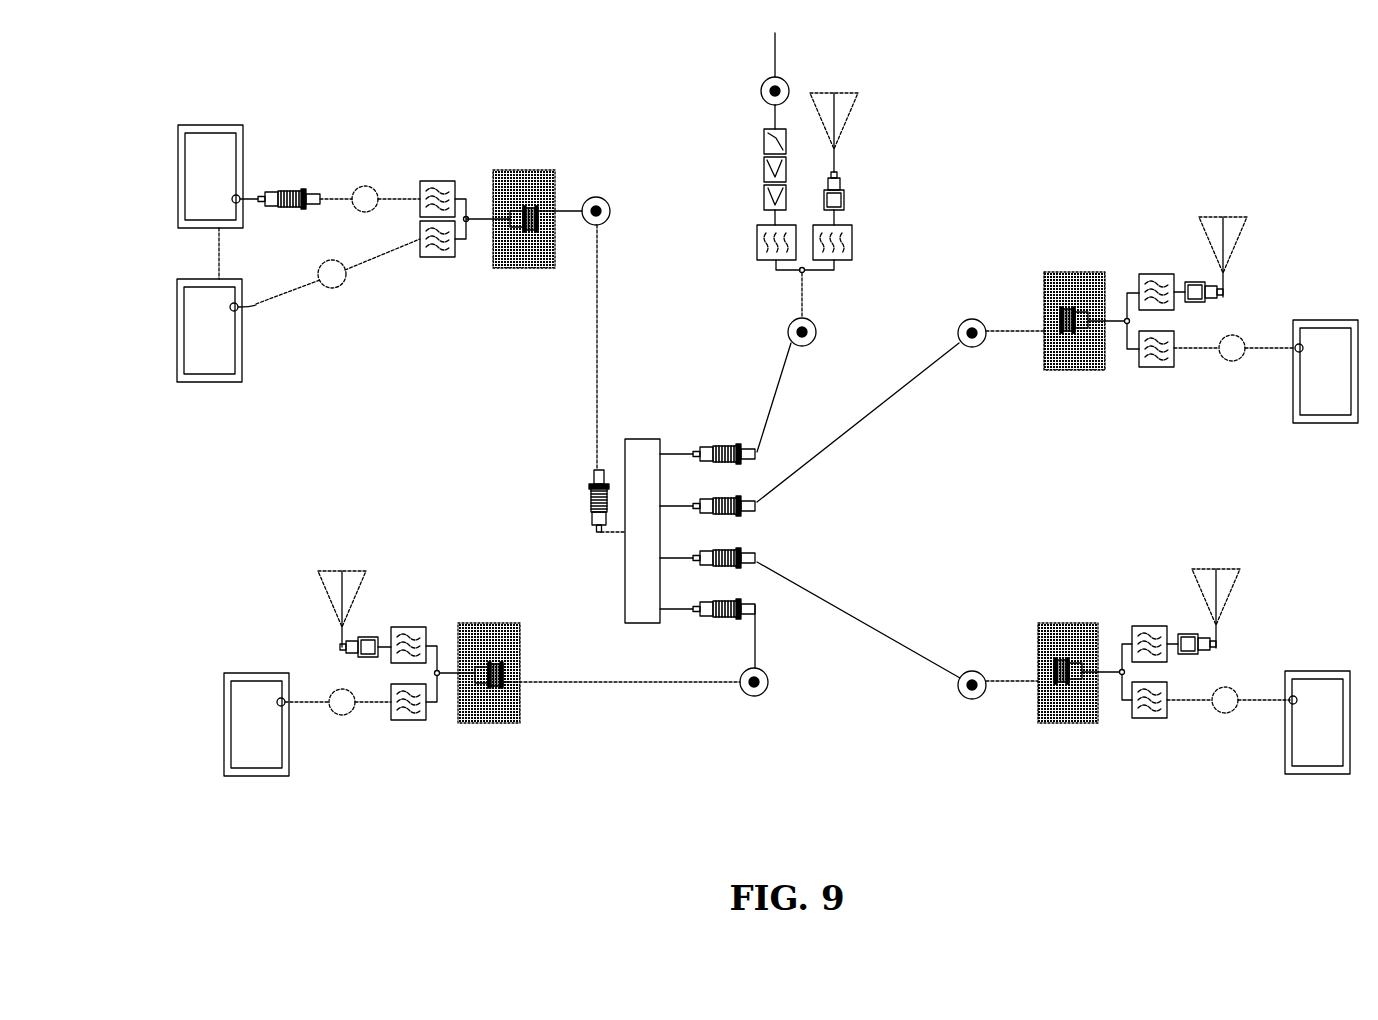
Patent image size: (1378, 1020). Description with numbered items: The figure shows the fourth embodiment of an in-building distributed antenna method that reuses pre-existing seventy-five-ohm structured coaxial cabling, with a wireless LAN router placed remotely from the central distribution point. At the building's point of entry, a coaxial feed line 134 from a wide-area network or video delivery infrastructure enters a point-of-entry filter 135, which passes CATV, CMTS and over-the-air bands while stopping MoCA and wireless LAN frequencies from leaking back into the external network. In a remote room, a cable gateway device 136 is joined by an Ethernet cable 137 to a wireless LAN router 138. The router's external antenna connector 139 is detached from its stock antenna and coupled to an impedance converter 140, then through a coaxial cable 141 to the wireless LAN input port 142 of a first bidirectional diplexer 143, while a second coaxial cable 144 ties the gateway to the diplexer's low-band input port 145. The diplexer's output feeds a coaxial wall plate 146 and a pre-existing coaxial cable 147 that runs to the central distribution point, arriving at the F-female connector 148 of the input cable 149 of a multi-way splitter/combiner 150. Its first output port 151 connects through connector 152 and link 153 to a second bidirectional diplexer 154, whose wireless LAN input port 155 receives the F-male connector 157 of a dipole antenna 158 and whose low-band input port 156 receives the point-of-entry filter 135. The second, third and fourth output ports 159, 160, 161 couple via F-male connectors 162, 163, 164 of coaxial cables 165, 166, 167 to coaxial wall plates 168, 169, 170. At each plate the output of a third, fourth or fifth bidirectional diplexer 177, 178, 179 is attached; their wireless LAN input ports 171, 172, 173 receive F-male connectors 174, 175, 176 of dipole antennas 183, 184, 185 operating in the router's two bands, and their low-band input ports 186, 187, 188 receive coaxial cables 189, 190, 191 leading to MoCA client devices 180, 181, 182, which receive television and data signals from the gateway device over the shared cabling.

The coaxial feed line 134 is at (756, 73).
The point-of-entry filter 135 is at (757, 168).
The cable gateway device 136 is at (203, 388).
The Ethernet cable 137 is at (214, 251).
The wireless LAN router 138 is at (203, 126).
The external antenna connector 139 is at (243, 189).
The impedance converter 140 is at (304, 186).
The RG-6 cable 141 is at (373, 185).
The 2.4-2.5 GHz/4.9-5.9 GHz input port 142 is at (442, 181).
The first bidirectional diplexer 143 is at (471, 246).
The second RG-6 cable 144 is at (302, 302).
The 5 MHz-2300 MHz input port 145 is at (417, 264).
The coaxial wall plate 146 is at (553, 166).
The RG-6 cable 147 is at (607, 306).
The F-female connector 148 is at (584, 512).
The input cable 149 is at (608, 536).
The bus 150 is at (639, 435).
The first output port 151 is at (675, 453).
The connector 152 is at (717, 450).
The node 153 is at (770, 390).
The second bidirectional diplexer 154 is at (790, 281).
The 2.4-2.5 GHz/4.9-5.9 GHz input port 155 is at (857, 242).
The 5 MHz-2300 MHz input port 156 is at (754, 238).
The F-male connector 157 is at (856, 186).
The dipole antenna 158 is at (865, 90).
The second output port 159 is at (672, 504).
The third output port 160 is at (672, 556).
The fourth output port 161 is at (674, 607).
The F-male connector 162 is at (716, 502).
The F-male connector 163 is at (716, 555).
The F-male connector 164 is at (716, 606).
The RG-6 cable 165 is at (957, 323).
The RG-6 cable 166 is at (950, 667).
The RG-6 cable 167 is at (765, 700).
The coaxial wall plate 168 is at (1043, 267).
The coaxial wall plate 169 is at (1038, 620).
The coaxial wall plate 170 is at (513, 615).
The 2.4-2.5 GHz/4.9-5.9 GHz input port 171 is at (1134, 271).
The 2.4-2.5 GHz/4.9-5.9 GHz input port 172 is at (1128, 624).
The 2.4-2.5 GHz/4.9-5.9 GHz input port 173 is at (432, 621).
The F-male connector 174 is at (1185, 270).
The F-male connector 175 is at (1188, 623).
The F-male connector 176 is at (364, 630).
The third bidirectional diplexer 177 is at (1126, 355).
The fourth bidirectional diplexer 178 is at (1120, 703).
The fifth bidirectional diplexer 179 is at (435, 712).
The MoCA client device 180 is at (1308, 315).
The MoCA client device 181 is at (1320, 665).
The MoCA client device 182 is at (244, 662).
The dipole antenna 183 is at (1250, 225).
The dipole antenna 184 is at (1250, 570).
The dipole antenna 185 is at (307, 567).
The 5 MHz-2300 MHz input port 186 is at (1170, 377).
The 5 MHz-2300 MHz input port 187 is at (1158, 725).
The 5 MHz-2300 MHz input port 188 is at (404, 728).
The RG-6 cable 189 is at (1239, 367).
The RG-6 cable 190 is at (1225, 721).
The RG-6 cable 191 is at (320, 711).